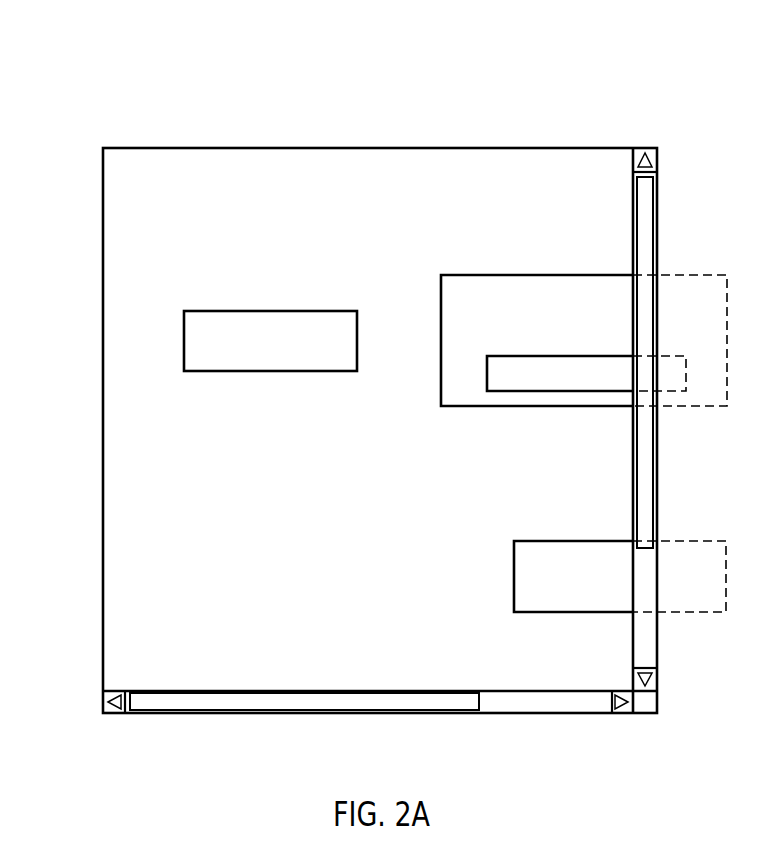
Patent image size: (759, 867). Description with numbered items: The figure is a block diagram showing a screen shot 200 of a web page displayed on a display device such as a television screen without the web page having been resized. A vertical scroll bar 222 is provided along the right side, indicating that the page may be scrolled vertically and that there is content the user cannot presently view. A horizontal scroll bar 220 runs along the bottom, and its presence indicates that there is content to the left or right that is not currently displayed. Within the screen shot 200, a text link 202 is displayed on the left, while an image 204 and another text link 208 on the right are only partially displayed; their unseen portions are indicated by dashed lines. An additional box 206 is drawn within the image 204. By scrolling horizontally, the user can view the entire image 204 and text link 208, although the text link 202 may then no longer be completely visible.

The screen shot 200 is at (597, 124).
The text link 202 is at (262, 372).
The image 204 is at (475, 407).
The image URL display box 206 is at (487, 374).
The text link 208 is at (514, 574).
The scroll bar 220 is at (447, 706).
The scroll bar 222 is at (648, 491).